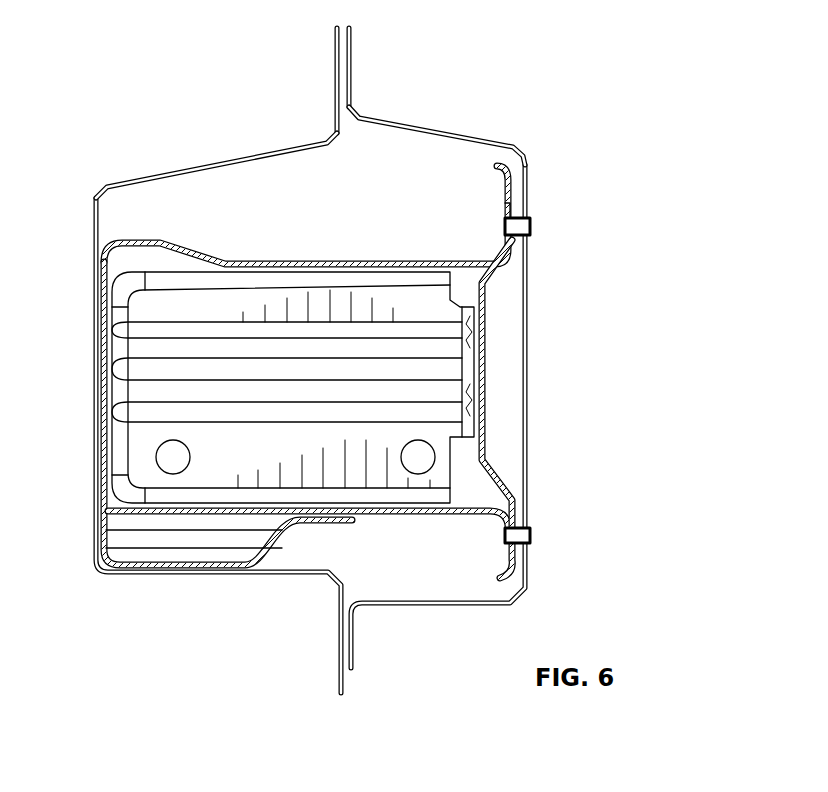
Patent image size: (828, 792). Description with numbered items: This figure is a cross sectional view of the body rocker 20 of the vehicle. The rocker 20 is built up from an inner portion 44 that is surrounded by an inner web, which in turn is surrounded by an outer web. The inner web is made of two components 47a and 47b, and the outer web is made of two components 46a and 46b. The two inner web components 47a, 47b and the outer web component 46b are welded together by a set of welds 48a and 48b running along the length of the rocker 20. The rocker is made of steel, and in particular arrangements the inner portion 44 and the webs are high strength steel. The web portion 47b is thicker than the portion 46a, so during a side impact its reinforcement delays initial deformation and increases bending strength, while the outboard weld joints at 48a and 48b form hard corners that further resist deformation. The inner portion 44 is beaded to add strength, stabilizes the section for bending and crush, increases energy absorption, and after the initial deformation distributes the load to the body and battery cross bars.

The rocker 20 is at (458, 66).
The inner portion 44 is at (448, 393).
The component of the outer web 46a is at (216, 165).
The component of the outer web 46b is at (440, 132).
The component of the inner web 47a is at (147, 240).
The component of the inner web 47b is at (495, 463).
The weld 48a is at (531, 228).
The weld 48b is at (532, 533).